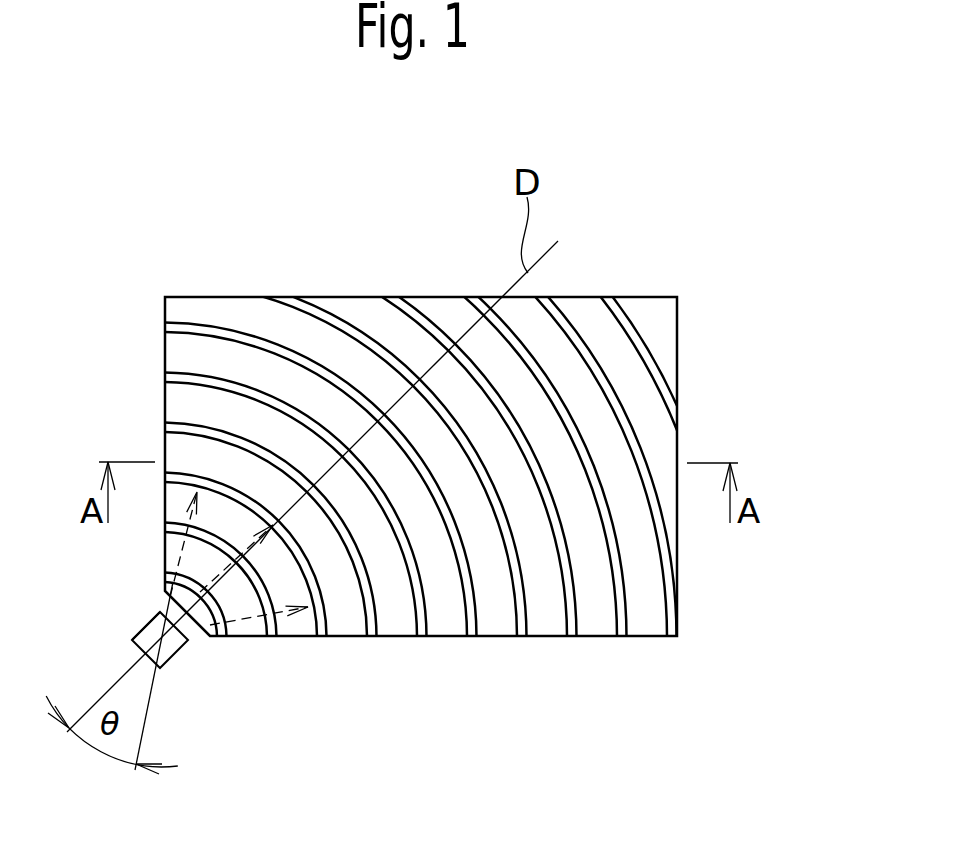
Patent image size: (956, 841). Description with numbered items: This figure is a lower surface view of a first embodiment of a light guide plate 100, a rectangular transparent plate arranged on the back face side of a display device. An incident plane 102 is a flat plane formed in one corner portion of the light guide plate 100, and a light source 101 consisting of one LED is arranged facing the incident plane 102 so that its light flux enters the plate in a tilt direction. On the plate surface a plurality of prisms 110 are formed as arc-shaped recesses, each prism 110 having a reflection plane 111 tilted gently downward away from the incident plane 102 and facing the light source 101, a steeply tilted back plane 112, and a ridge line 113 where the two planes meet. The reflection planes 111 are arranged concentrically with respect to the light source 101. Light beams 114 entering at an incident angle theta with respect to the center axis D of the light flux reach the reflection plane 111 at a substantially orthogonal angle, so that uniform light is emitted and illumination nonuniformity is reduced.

The light guide plate 100 is at (703, 278).
The light source 101 is at (170, 652).
The incident plane 102 is at (150, 617).
The prism 110 is at (632, 605).
The reflection plane 111 is at (583, 313).
The back plane 112 is at (432, 322).
The ridge line 113 is at (343, 317).
The light beam 114 is at (168, 555).